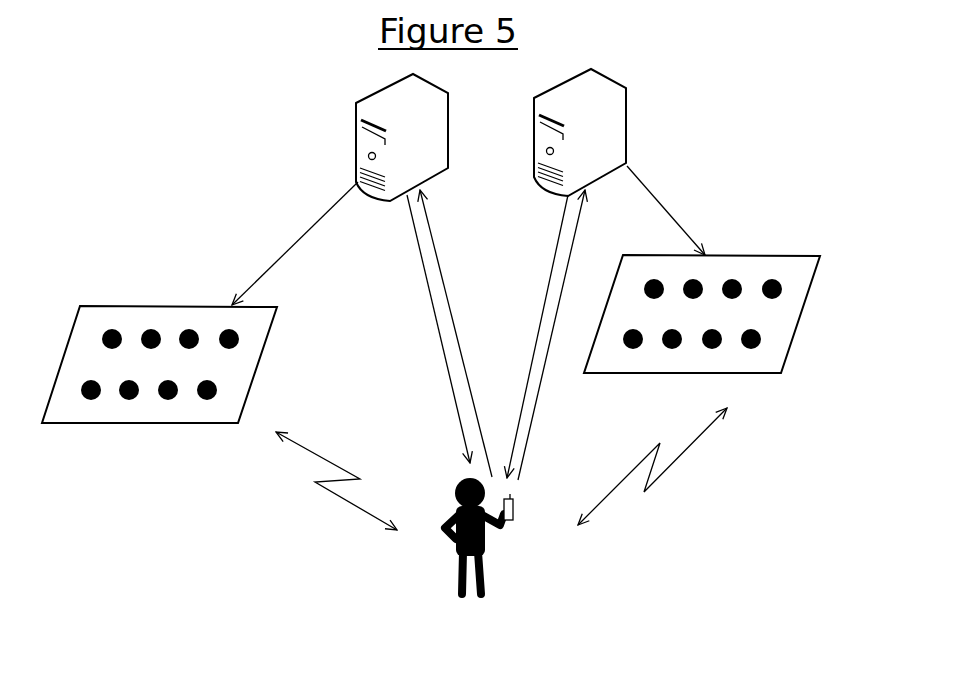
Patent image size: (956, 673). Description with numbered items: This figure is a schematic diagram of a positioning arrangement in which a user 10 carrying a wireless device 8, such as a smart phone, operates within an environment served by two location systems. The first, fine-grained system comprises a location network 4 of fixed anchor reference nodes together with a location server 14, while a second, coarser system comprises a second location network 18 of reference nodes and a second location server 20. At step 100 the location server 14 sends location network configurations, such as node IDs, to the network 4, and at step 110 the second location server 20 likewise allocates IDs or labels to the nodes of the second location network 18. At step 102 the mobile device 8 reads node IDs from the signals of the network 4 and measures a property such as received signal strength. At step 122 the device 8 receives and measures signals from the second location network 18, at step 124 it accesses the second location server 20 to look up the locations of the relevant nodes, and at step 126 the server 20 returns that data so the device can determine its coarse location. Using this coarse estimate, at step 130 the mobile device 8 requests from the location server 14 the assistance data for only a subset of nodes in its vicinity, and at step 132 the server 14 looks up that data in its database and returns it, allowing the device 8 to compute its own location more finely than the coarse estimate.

The location network 4 is at (148, 306).
The wireless device 8 is at (515, 508).
The user 10 is at (460, 555).
The location server 14 is at (448, 110).
The second location network 18 is at (748, 255).
The second location server 20 is at (630, 110).
The step of sending location network configurations 100 is at (297, 240).
The step of reading node IDs and measuring signals 102 is at (332, 497).
The step of sending second location network configurations 110 is at (673, 207).
The step of receiving second network signals 122 is at (672, 463).
The step of accessing second location server 124 is at (542, 393).
The step of returning second network assistance data 126 is at (565, 213).
The step of requesting subset assistance data 130 is at (448, 313).
The step of returning subset assistance data 132 is at (430, 298).